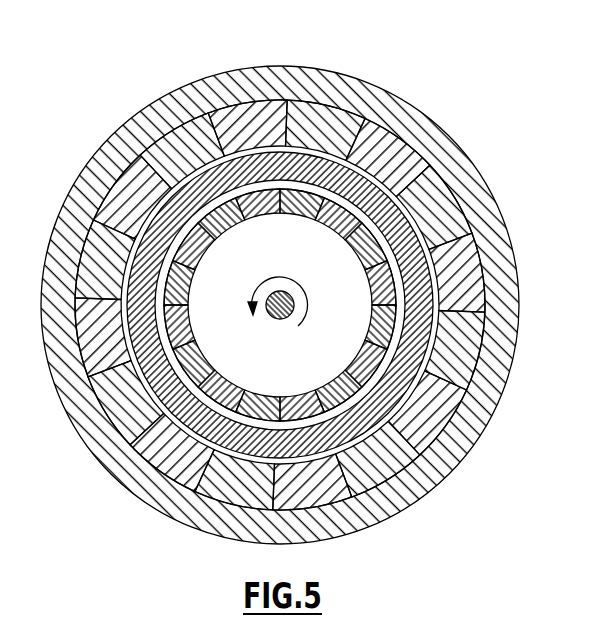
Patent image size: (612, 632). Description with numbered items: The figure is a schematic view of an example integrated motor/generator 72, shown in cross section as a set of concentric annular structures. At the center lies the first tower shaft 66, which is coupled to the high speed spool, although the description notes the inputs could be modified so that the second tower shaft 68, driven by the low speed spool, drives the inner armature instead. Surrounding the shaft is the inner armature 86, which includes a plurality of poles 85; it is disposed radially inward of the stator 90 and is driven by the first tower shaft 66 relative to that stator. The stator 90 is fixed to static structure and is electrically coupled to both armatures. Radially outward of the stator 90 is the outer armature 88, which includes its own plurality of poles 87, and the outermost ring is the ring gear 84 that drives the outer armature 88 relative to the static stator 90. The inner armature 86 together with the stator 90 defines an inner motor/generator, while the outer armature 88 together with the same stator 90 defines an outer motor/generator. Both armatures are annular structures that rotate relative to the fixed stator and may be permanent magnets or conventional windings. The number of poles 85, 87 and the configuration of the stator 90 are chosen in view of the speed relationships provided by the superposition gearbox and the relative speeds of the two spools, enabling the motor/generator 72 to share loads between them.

The integrated motor/generator 72 is at (480, 91).
The ring gear 84 is at (88, 188).
The outer armature 88 is at (102, 267).
The poles 87 is at (152, 433).
The inner armature 86 is at (182, 328).
The poles 85 is at (366, 262).
The stator 90 is at (170, 345).
The first tower shaft 66 is at (404, 361).
The second tower shaft 68 is at (298, 328).